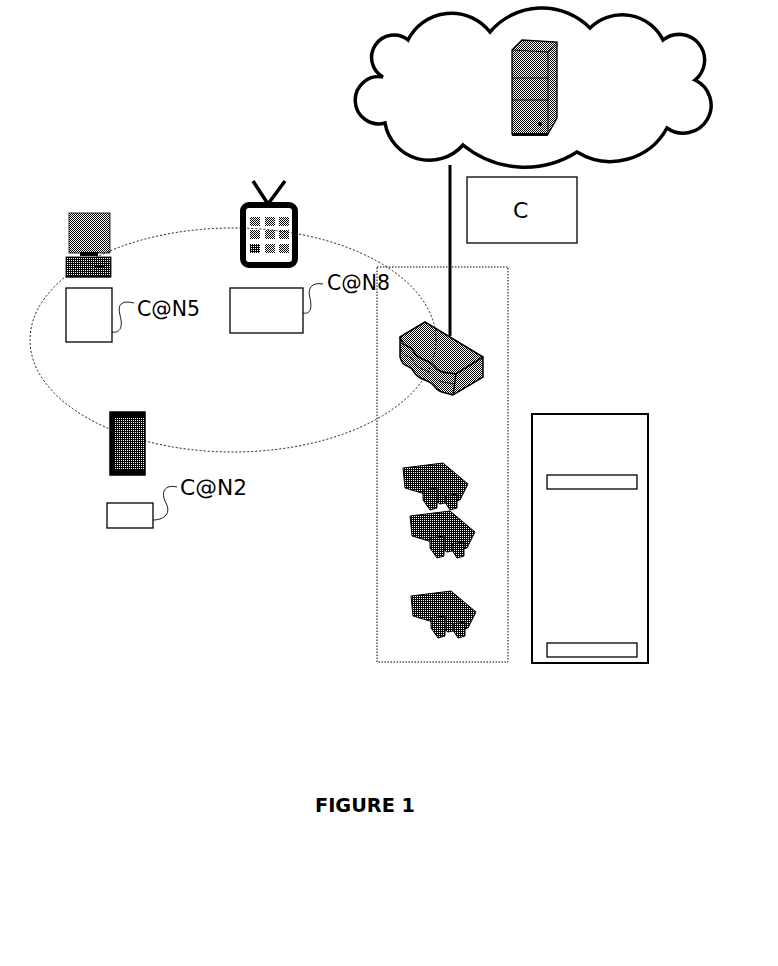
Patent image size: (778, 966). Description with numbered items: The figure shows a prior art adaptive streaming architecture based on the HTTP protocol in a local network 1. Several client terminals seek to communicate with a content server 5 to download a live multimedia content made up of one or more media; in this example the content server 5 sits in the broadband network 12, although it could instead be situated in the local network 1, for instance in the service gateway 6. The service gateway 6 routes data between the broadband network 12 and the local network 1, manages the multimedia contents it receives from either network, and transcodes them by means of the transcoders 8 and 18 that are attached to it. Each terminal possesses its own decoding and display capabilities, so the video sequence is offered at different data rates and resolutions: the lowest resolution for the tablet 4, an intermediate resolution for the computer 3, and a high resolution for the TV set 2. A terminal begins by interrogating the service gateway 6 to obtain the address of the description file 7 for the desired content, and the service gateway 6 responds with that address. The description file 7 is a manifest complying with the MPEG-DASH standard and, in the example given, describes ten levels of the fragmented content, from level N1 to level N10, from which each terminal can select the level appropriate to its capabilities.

The local network 1 is at (292, 448).
The TV set 2 is at (298, 214).
The computer 3 is at (93, 214).
The tablet 4 is at (145, 432).
The content server 5 is at (511, 98).
The service gateway 6 is at (508, 327).
The description file 7 is at (605, 522).
The transcoder 8 is at (467, 485).
The broadband network 12 is at (371, 57).
The transcoder 18 is at (467, 612).
The level N1 is at (580, 474).
The level N10 is at (571, 642).